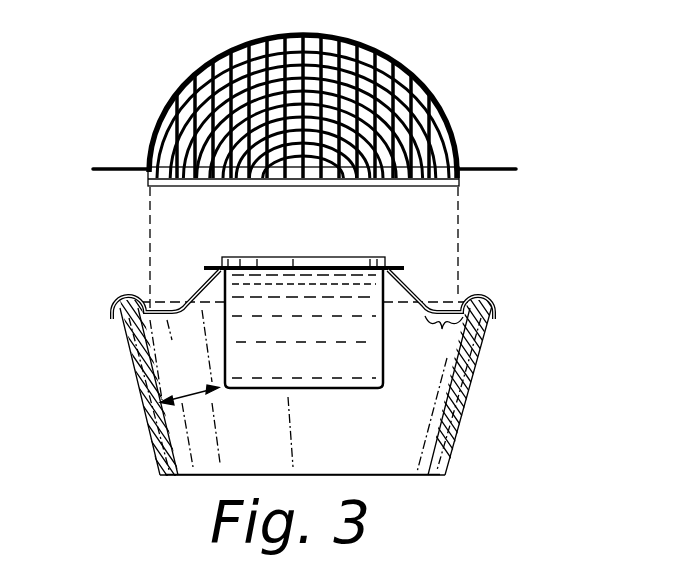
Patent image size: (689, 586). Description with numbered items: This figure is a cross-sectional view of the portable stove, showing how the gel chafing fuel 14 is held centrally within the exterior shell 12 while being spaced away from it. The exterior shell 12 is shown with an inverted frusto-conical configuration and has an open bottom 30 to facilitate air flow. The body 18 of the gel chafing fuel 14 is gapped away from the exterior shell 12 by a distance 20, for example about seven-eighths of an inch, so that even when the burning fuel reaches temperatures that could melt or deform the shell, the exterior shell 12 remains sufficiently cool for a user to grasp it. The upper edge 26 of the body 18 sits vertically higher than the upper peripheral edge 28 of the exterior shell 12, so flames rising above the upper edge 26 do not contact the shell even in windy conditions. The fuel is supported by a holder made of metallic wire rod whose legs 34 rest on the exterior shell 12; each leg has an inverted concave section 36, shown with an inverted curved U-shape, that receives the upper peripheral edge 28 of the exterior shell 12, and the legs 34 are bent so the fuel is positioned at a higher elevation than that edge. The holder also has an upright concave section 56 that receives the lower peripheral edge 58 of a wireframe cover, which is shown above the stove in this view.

The exterior shell 12 is at (329, 403).
The gel chafing fuel 14 is at (309, 327).
The body 18 is at (322, 390).
The distance 20 is at (190, 398).
The upper edge 26 is at (240, 257).
The upper peripheral edge 28 is at (478, 300).
The open bottom 30 is at (398, 476).
The legs 34 is at (158, 308).
The inverted concave section 36 is at (478, 345).
The upright concave section 56 is at (444, 347).
The lower peripheral edge 58 is at (459, 186).